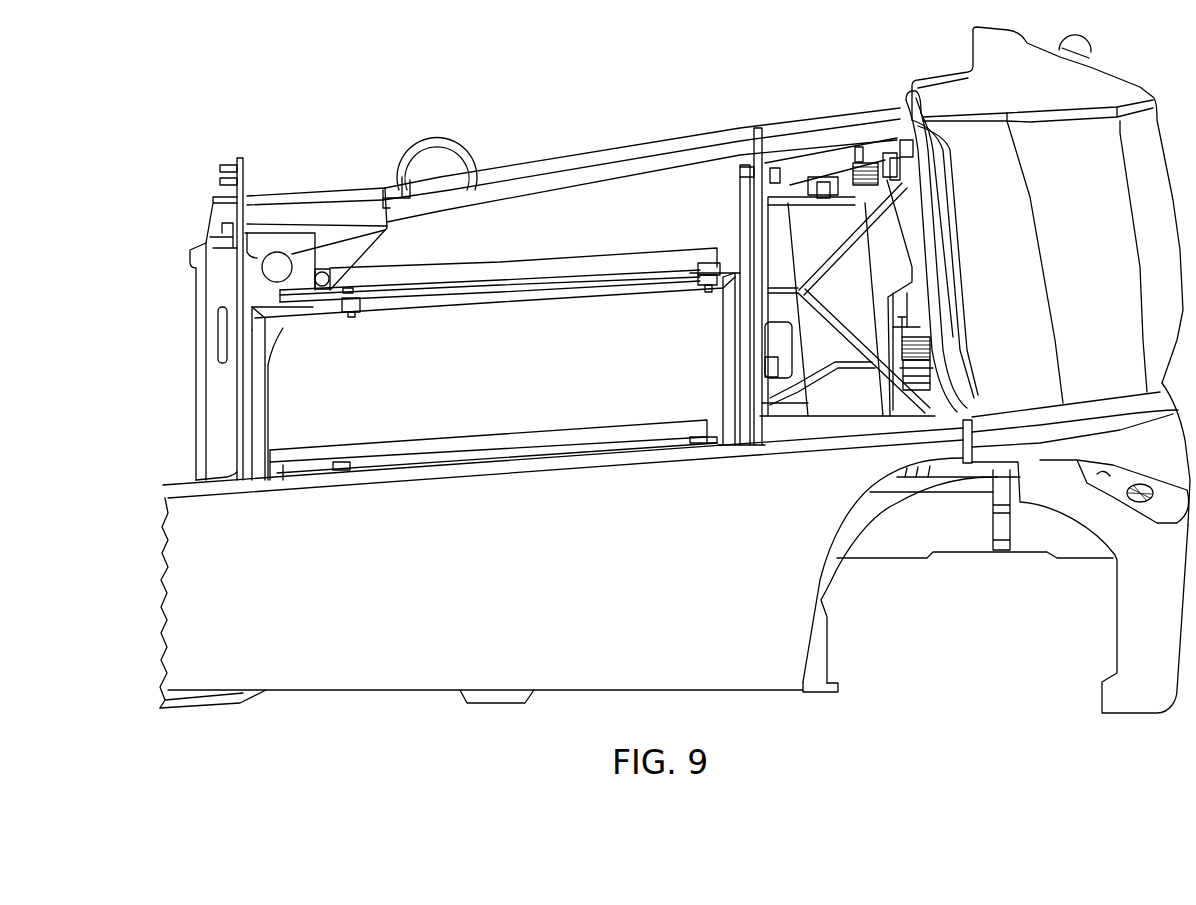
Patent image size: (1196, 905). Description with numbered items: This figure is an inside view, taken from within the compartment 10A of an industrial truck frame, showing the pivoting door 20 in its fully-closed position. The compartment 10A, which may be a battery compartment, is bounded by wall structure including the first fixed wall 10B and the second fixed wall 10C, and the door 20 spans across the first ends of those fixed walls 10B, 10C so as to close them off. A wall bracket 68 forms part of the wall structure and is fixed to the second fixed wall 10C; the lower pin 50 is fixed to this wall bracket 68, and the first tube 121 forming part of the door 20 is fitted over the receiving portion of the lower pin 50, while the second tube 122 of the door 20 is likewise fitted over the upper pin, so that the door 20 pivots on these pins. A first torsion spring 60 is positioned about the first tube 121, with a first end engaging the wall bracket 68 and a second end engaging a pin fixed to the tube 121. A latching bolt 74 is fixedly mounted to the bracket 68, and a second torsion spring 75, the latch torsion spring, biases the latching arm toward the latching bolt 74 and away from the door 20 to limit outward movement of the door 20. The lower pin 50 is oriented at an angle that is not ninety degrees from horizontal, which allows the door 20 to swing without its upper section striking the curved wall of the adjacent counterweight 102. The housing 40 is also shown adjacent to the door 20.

The compartment 10A is at (517, 230).
The first fixed wall 10B is at (241, 157).
The second fixed wall 10C is at (755, 128).
The door 20 is at (606, 166).
The housing 40 is at (348, 171).
The lower pin 50 is at (922, 392).
The first torsion spring 60 is at (922, 352).
The wall bracket 68 is at (858, 291).
The latching bolt 74 is at (825, 185).
The second torsion spring 75 is at (866, 165).
The counterweight 102 is at (1042, 84).
The first tube 121 is at (915, 320).
The second tube 122 is at (900, 165).